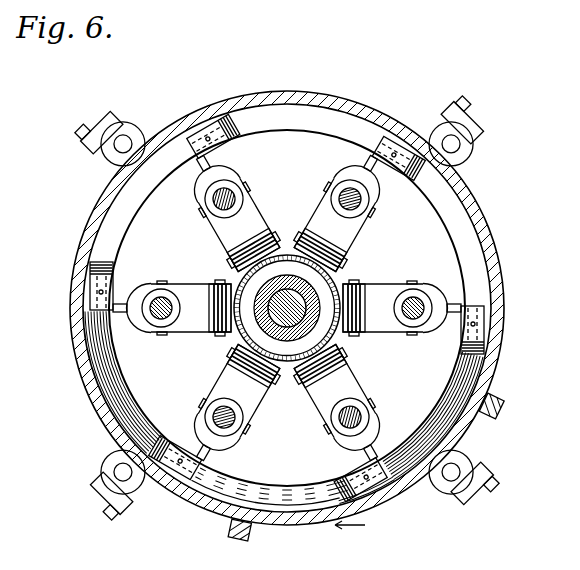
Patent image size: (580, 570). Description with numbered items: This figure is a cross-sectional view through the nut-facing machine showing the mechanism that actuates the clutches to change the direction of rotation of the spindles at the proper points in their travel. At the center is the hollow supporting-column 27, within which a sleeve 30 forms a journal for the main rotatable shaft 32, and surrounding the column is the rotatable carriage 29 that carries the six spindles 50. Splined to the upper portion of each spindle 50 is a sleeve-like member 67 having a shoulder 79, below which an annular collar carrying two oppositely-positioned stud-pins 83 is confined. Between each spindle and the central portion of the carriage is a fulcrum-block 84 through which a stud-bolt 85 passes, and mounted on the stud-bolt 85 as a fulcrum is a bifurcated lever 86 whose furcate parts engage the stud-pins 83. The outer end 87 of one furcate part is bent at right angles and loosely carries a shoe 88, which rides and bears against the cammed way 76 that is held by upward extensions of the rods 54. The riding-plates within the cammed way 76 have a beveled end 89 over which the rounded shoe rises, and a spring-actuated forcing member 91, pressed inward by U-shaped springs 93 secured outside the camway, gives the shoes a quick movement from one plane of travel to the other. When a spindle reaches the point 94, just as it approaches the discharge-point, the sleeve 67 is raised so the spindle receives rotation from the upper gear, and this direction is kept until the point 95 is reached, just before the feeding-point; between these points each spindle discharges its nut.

The hollow supporting-column 27 is at (262, 322).
The rotatable carriage 29 is at (246, 277).
The sleeve 30 is at (290, 268).
The main rotatable shaft 32 is at (292, 352).
The spindle 50 is at (402, 304).
The rods 54 is at (286, 307).
The sleeve-like member 67 is at (362, 200).
The cammed way 76 is at (490, 238).
The shoulder 79 is at (152, 284).
The stud-pins 83 is at (327, 192).
The fulcrum-block 84 is at (360, 288).
The stud-bolt 85 is at (353, 280).
The bifurcated lever 86 is at (448, 294).
The outer end 87 is at (372, 140).
The shoe 88 is at (393, 150).
The beveled end 89 is at (95, 265).
The spring-actuated forcing member 91 is at (362, 496).
The U-shaped springs 93 is at (238, 530).
The point 94 is at (388, 482).
The point 95 is at (163, 468).